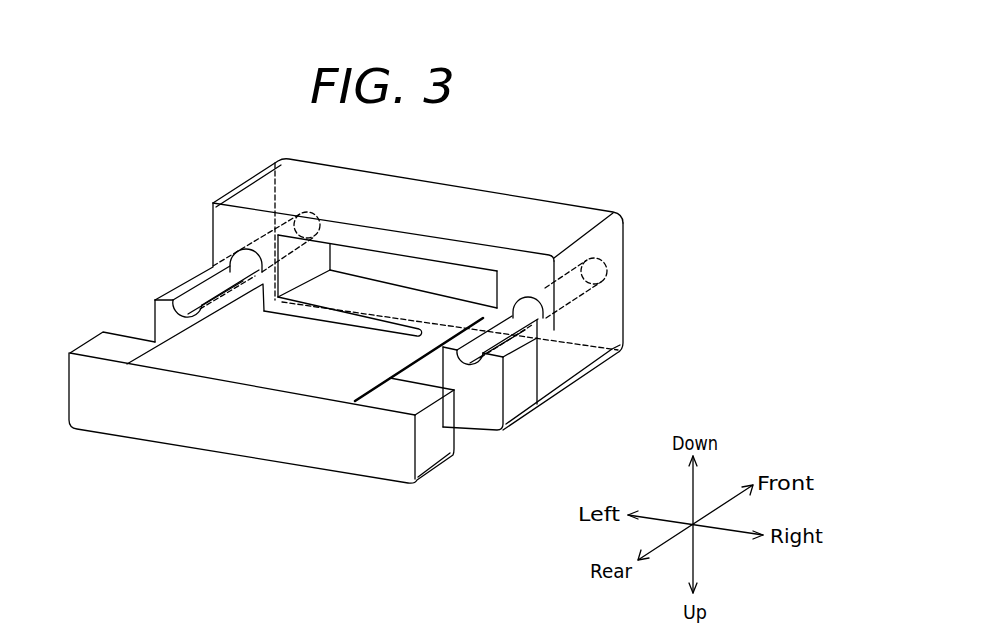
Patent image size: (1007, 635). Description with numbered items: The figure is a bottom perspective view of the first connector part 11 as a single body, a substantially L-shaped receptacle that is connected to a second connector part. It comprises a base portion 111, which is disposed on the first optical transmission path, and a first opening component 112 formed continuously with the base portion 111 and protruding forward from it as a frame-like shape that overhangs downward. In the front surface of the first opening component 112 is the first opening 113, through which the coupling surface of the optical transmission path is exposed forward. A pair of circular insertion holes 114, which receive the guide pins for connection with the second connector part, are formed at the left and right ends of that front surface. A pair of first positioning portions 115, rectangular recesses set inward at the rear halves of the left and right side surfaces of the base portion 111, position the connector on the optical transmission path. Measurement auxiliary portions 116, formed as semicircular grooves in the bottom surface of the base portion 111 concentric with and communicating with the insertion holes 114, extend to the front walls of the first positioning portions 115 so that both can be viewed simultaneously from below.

The first connector part 11 is at (622, 137).
The base portion 111 is at (523, 390).
The first opening component 112 is at (607, 302).
The first opening 113 is at (427, 273).
The insertion holes 114 is at (243, 262).
The first positioning portions 115 is at (144, 327).
The measurement auxiliary portions 116 is at (213, 293).